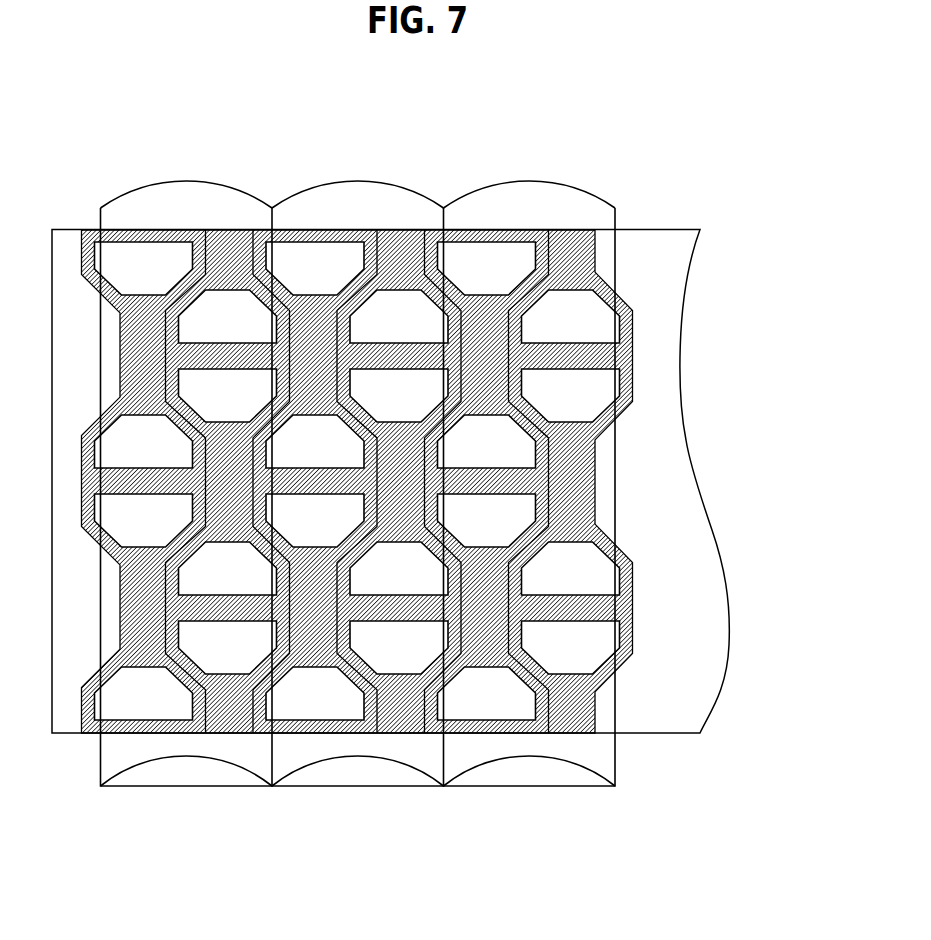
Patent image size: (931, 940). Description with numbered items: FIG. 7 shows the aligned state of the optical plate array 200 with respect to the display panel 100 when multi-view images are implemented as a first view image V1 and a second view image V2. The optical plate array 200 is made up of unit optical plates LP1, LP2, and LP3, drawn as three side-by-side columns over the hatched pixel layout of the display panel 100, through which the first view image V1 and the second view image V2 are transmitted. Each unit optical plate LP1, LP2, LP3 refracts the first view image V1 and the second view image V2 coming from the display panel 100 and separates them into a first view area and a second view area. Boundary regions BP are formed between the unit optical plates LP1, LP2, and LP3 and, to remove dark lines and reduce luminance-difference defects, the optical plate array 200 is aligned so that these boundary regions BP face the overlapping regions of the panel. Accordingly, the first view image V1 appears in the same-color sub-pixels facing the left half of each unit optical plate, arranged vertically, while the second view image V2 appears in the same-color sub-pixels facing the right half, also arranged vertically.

The display panel 100 is at (688, 432).
The optical plate array 200 is at (543, 788).
The unit optical plate LP1 is at (185, 181).
The unit optical plate LP2 is at (355, 181).
The unit optical plate LP3 is at (525, 181).
The boundary region BP is at (444, 208).
The first view image V1 is at (315, 481).
The second view image V2 is at (399, 482).